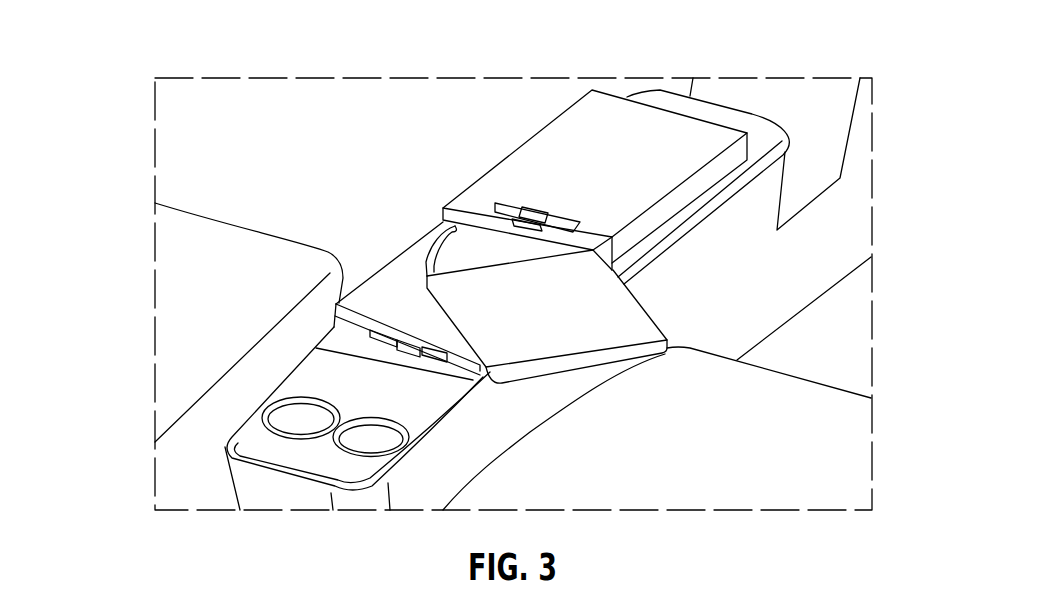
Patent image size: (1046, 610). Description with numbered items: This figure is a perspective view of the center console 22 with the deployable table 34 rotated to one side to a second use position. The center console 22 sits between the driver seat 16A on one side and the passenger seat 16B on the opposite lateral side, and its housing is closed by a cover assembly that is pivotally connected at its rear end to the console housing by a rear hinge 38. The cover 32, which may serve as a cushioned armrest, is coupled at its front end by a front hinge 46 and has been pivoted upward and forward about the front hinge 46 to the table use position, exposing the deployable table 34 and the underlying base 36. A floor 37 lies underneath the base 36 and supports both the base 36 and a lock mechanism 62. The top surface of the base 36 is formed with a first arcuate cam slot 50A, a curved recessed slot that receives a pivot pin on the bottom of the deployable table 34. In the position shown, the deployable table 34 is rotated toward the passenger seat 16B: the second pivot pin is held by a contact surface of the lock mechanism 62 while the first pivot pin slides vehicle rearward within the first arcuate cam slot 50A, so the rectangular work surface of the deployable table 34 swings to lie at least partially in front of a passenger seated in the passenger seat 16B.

The driver seat 16A is at (185, 270).
The passenger seat 16B is at (808, 400).
The center console 22 is at (738, 115).
The cover 32 is at (593, 110).
The deployable table 34 is at (633, 330).
The base 36 is at (382, 280).
The floor 37 is at (350, 335).
The rear hinge 38 is at (370, 340).
The front hinge 46 is at (533, 210).
The first arcuate cam slot 50A is at (428, 238).
The lock mechanism 62 is at (517, 217).